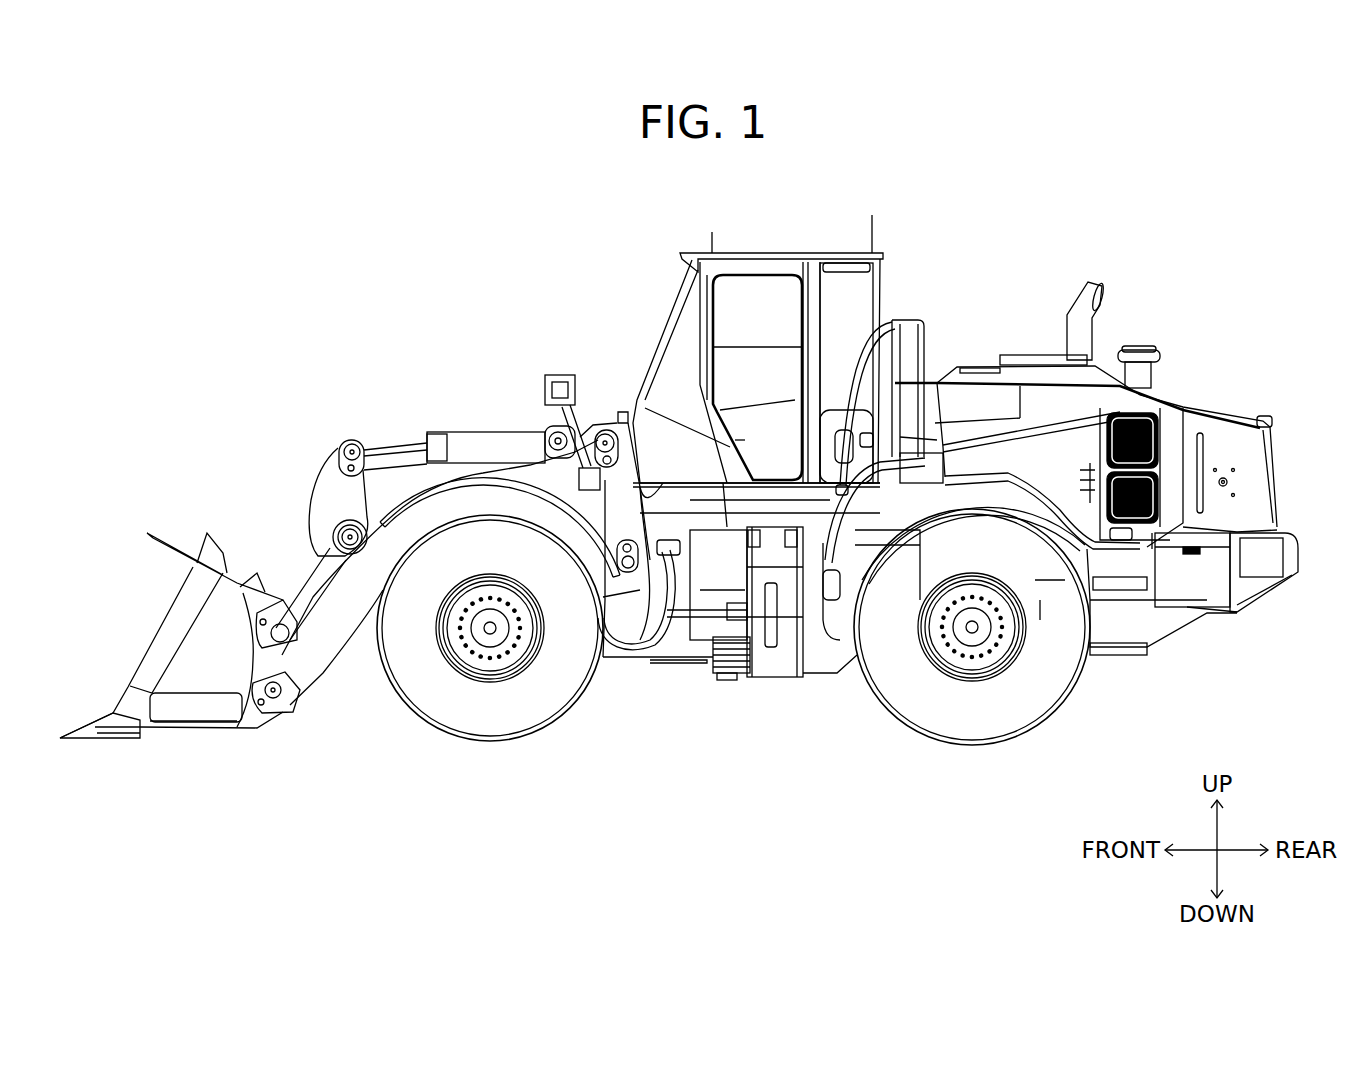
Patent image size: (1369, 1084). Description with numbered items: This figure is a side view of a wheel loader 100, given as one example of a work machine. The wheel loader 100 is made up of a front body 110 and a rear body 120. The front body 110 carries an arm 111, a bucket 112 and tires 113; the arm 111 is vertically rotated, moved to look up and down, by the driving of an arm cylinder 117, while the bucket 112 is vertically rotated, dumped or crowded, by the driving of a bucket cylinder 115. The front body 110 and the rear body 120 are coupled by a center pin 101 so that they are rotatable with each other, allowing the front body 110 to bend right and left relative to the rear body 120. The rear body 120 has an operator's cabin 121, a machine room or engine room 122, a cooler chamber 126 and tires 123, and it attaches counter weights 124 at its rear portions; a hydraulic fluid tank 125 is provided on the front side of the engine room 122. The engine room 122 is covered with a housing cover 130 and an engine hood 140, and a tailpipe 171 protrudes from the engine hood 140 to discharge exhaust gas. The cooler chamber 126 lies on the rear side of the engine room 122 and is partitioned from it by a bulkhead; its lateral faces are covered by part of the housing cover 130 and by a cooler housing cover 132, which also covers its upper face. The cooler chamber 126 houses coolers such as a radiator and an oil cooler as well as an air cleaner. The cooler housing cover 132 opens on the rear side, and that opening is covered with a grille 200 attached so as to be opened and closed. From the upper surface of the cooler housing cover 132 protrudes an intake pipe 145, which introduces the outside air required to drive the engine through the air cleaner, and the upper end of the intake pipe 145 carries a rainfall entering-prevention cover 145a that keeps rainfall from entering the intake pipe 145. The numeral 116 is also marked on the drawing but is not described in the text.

The wheel loader 100 is at (351, 269).
The center pin 101 is at (728, 675).
The front body 110 is at (615, 425).
The arm 111 is at (317, 600).
The bucket 112 is at (225, 593).
The tires 113 is at (462, 720).
The bucket cylinder 115 is at (482, 428).
The lift cylinder / hydraulic hoses 116 is at (668, 643).
The arm cylinder 117 is at (368, 518).
The rear body 120 is at (1165, 629).
The operator's cabin 121 is at (783, 290).
The machine room (engine room) 122 is at (975, 445).
The tires 123 is at (1017, 713).
The counter weights 124 is at (1257, 582).
The hydraulic fluid tank 125 is at (893, 400).
The cooler chamber 126 is at (1167, 480).
The housing cover 130 is at (1070, 450).
The cooler housing cover 132 is at (1222, 450).
The engine hood 140 is at (980, 356).
The intake pipe 145 is at (1143, 378).
The rainfall entering-prevention cover 145a is at (1162, 350).
The tailpipe 171 is at (1077, 303).
The grille 200 is at (1270, 440).